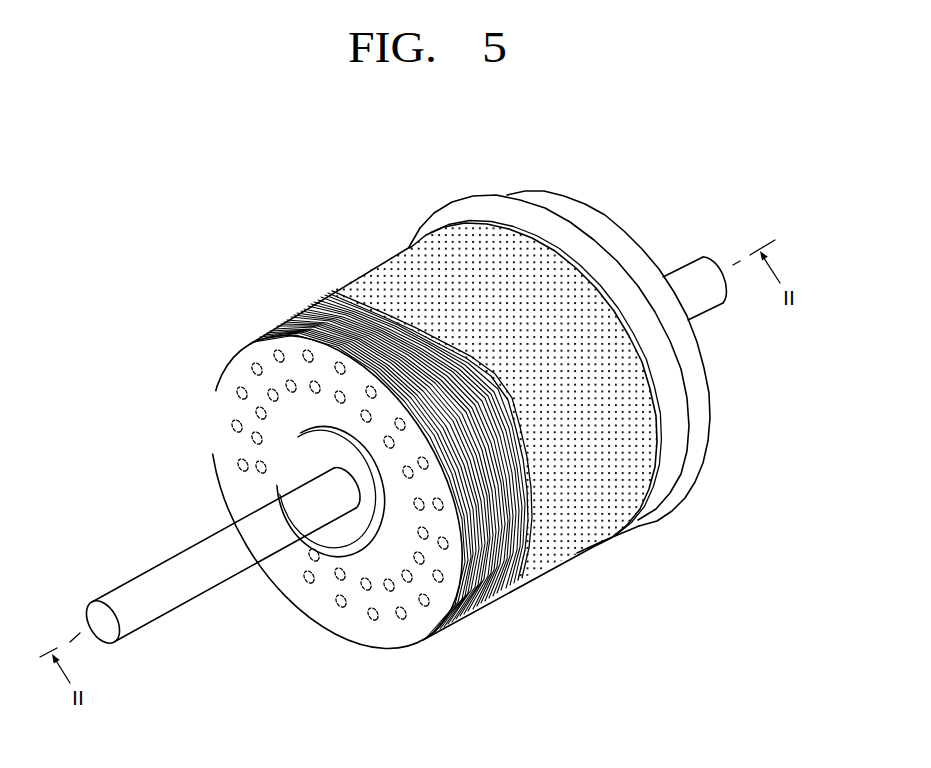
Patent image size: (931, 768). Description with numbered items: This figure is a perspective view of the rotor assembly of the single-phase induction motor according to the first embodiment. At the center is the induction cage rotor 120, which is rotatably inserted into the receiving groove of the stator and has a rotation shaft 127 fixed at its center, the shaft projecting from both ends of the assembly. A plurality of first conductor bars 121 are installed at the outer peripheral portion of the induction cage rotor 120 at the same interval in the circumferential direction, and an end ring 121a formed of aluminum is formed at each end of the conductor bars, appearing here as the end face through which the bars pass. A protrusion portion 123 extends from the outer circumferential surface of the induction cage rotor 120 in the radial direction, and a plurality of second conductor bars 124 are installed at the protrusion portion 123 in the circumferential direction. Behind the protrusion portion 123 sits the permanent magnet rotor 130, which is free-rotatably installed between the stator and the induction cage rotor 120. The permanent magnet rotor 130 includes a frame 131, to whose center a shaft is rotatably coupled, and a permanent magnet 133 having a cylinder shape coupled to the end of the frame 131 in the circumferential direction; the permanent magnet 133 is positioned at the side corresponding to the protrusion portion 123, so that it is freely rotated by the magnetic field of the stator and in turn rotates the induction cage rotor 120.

The induction cage rotor 120 is at (278, 608).
The first conductor bar 121 is at (257, 438).
The end ring 121a is at (223, 468).
The protrusion portion 123 is at (289, 313).
The second conductor bar 124 is at (242, 393).
The rotation shaft 127 is at (147, 580).
The permanent magnet rotor 130 is at (441, 199).
The frame 131 is at (539, 198).
The permanent magnet 133 is at (396, 262).